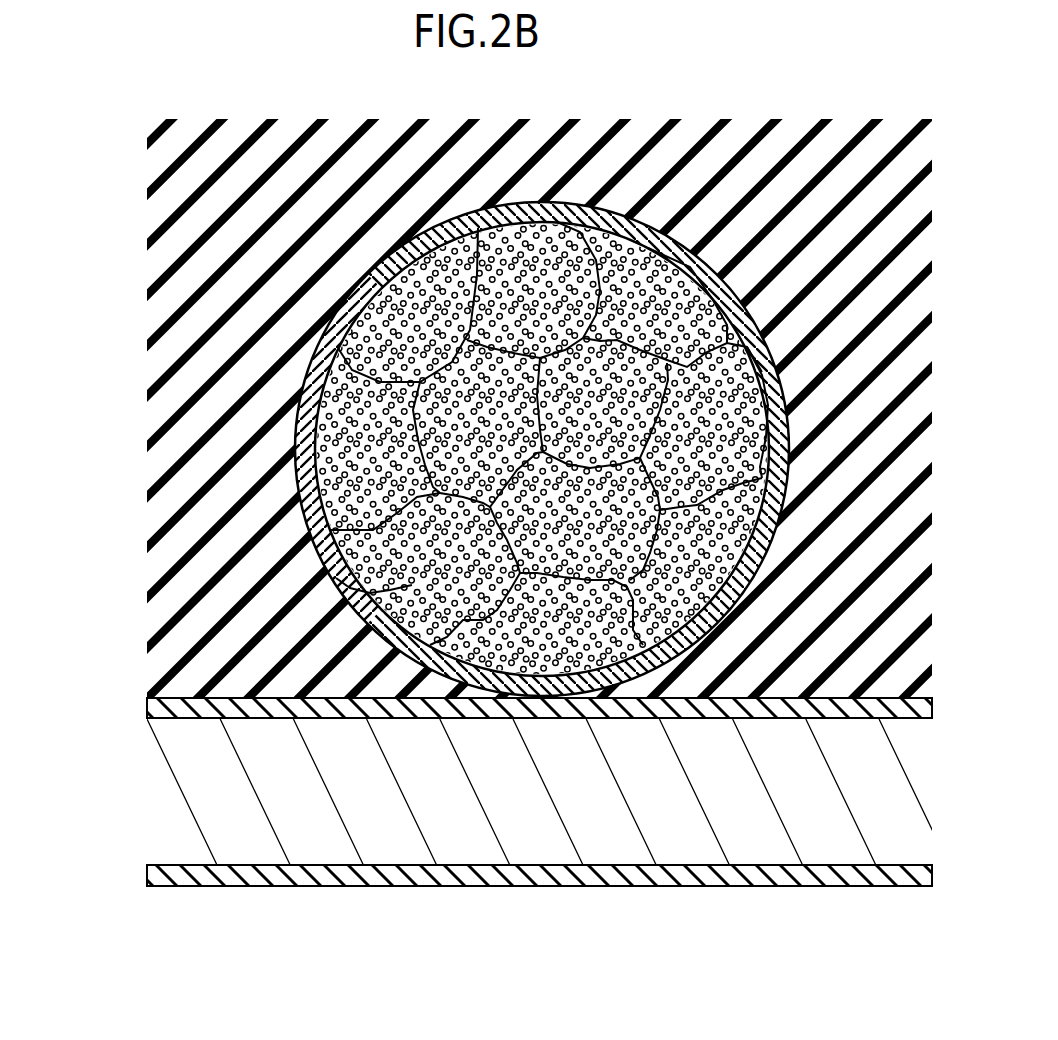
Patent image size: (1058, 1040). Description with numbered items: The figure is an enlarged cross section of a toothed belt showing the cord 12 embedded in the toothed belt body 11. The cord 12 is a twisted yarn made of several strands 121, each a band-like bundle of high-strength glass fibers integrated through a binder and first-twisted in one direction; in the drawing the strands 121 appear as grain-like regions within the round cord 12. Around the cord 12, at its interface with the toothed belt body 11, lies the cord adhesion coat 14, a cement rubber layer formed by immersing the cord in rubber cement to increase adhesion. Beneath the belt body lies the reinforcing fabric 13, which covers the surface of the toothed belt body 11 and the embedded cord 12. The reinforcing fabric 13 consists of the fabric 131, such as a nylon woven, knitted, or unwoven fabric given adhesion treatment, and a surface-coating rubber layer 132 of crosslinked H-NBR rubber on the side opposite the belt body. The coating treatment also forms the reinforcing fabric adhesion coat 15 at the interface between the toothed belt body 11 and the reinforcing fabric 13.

The toothed belt body 11 is at (583, 142).
The cord 12 is at (472, 449).
The strands 121 is at (766, 512).
The reinforcing fabric 13 is at (483, 806).
The fabric 131 is at (200, 817).
The surface-coating rubber layer 132 is at (160, 879).
The cord adhesion coat 14 is at (296, 406).
The reinforcing fabric adhesion coat 15 is at (160, 712).